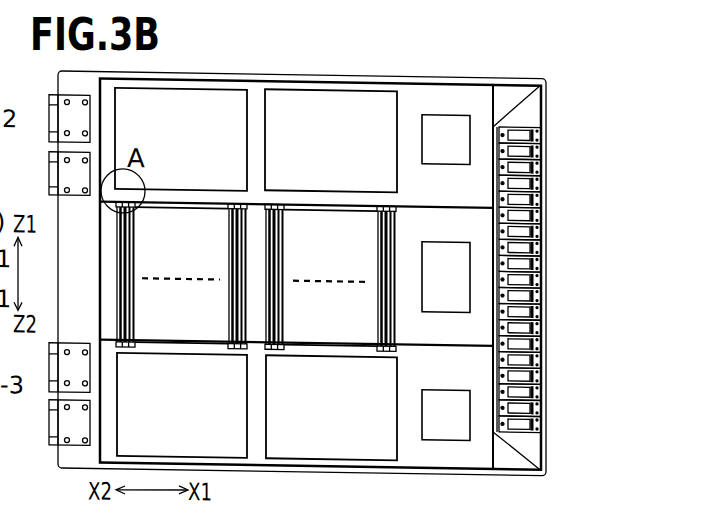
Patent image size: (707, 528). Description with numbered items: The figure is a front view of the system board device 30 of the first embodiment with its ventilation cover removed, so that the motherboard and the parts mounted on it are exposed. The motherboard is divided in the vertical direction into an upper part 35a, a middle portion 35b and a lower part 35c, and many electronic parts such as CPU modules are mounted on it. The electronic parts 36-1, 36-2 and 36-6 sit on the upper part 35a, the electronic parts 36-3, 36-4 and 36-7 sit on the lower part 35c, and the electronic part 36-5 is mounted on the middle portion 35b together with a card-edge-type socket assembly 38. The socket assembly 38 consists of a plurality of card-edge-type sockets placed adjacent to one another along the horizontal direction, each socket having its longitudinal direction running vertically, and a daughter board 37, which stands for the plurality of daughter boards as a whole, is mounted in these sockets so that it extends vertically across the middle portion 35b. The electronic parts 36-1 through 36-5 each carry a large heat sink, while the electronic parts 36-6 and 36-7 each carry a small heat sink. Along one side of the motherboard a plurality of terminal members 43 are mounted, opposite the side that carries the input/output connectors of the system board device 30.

The system board device 30 is at (492, 56).
The terminal members 43 is at (49, 117).
The electronic part 36-1 is at (203, 123).
The electronic part 36-2 is at (349, 122).
The electronic part 36-3 is at (203, 400).
The electronic part 36-4 is at (355, 398).
The electronic part 36-5 is at (426, 299).
The electronic part 36-6 is at (447, 157).
The electronic part 36-7 is at (426, 427).
The daughter board 37 is at (113, 248).
The card-edge-type socket assembly 38 is at (403, 222).
The upper part 35a is at (565, 71).
The middle portion 35b is at (565, 200).
The lower part 35c is at (565, 361).